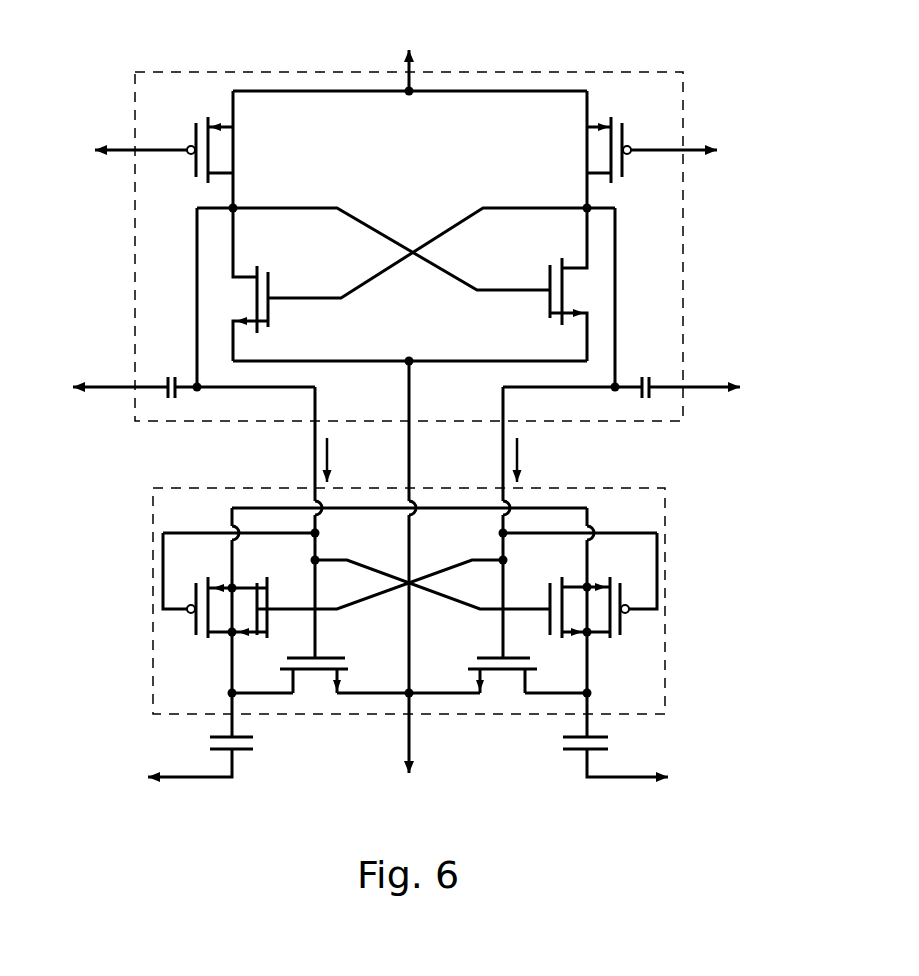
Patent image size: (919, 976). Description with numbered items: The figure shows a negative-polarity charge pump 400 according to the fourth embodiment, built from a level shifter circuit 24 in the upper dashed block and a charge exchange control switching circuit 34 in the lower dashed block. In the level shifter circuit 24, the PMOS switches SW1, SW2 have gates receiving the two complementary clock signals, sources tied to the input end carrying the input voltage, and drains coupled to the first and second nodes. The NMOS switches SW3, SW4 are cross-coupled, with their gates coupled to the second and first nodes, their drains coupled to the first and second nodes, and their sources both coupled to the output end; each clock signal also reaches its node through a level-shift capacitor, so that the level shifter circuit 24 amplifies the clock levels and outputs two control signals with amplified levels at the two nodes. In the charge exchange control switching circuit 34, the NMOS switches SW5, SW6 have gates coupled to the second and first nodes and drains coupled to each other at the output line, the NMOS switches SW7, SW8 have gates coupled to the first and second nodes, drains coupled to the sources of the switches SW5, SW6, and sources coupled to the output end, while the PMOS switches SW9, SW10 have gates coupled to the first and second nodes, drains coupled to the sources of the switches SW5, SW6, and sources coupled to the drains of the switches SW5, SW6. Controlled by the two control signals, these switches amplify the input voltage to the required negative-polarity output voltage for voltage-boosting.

The negative-polarity charge pump 400 is at (770, 123).
The level shifter circuit 24 is at (683, 250).
The charge exchange control switching circuit 34 is at (665, 630).
The switch SW1 is at (185, 150).
The switch SW2 is at (625, 150).
The switch SW3 is at (277, 284).
The switch SW4 is at (538, 284).
The switch SW5 is at (259, 595).
The switch SW6 is at (558, 595).
The switch SW7 is at (331, 661).
The switch SW8 is at (488, 661).
The switch SW9 is at (199, 623).
The switch SW10 is at (620, 623).